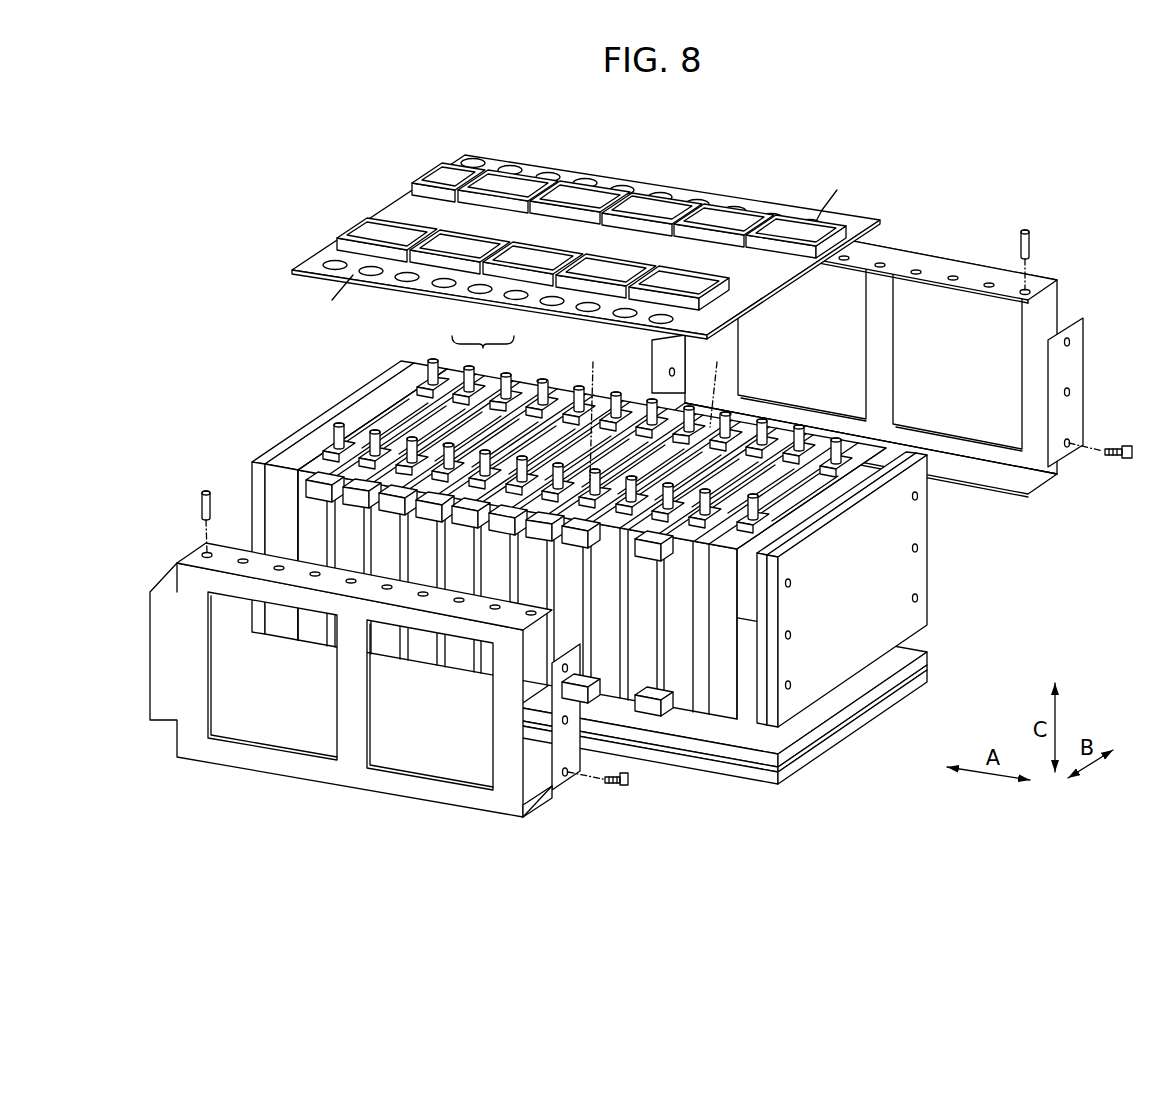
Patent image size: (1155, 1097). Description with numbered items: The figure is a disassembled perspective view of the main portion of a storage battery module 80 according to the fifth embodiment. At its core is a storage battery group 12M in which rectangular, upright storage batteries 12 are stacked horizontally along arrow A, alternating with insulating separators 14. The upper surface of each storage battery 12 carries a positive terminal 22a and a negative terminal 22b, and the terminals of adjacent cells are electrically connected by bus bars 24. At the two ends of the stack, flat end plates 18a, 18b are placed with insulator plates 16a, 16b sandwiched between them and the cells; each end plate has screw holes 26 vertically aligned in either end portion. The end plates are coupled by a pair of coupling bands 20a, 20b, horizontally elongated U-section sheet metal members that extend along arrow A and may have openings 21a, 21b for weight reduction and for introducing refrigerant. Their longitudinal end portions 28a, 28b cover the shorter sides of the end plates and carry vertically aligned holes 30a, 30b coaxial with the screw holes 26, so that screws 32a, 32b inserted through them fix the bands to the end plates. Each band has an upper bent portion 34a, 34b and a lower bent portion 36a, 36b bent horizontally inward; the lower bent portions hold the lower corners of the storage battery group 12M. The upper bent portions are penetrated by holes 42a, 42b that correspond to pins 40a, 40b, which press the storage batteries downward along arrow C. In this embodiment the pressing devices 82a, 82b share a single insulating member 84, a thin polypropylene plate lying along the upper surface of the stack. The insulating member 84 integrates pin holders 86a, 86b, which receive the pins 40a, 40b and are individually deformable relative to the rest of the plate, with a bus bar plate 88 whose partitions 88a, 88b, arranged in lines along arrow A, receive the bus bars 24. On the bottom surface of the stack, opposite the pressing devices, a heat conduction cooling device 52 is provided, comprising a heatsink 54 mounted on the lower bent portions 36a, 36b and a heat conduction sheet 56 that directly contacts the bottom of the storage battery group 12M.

The storage battery 12 is at (457, 413).
The storage battery group 12M is at (483, 329).
The insulating separator 14 is at (683, 695).
The insulator plate 16a is at (757, 728).
The insulator plate 16b is at (300, 442).
The end plate 18a is at (787, 728).
The end plate 18b is at (373, 387).
The coupling band 20a is at (233, 762).
The coupling band 20b is at (953, 247).
The opening 21a is at (212, 677).
The opening 21b is at (740, 312).
The positive terminal 22a is at (723, 428).
The negative terminal 22b is at (843, 465).
The bus bar 24 is at (655, 408).
The screw hole 26 is at (918, 603).
The end portion 28a is at (162, 582).
The end portion 28b is at (1070, 415).
The hole 30a is at (567, 770).
The hole 30b is at (1068, 450).
The screw 32a is at (630, 792).
The screw 32b is at (1128, 460).
The upper bent portion 34a is at (297, 578).
The upper bent portion 34b is at (898, 262).
The lower bent portion 36a is at (545, 807).
The lower bent portion 36b is at (1018, 475).
The pin 40a is at (202, 498).
The pin 40b is at (1027, 233).
The hole 42a is at (205, 562).
The hole 42b is at (1026, 291).
The heat conduction cooling device 52 is at (938, 665).
The heatsink 54 is at (907, 688).
The heat conduction sheet 56 is at (912, 678).
The storage battery module 80 is at (548, 106).
The pressing device 82a is at (198, 483).
The pressing device 82b is at (1053, 243).
The insulating member 84 is at (772, 197).
The pin holder 86a is at (337, 270).
The pin holder 86b is at (790, 226).
The bus bar plate 88 is at (757, 272).
The partition 88a is at (553, 262).
The partition 88b is at (730, 222).